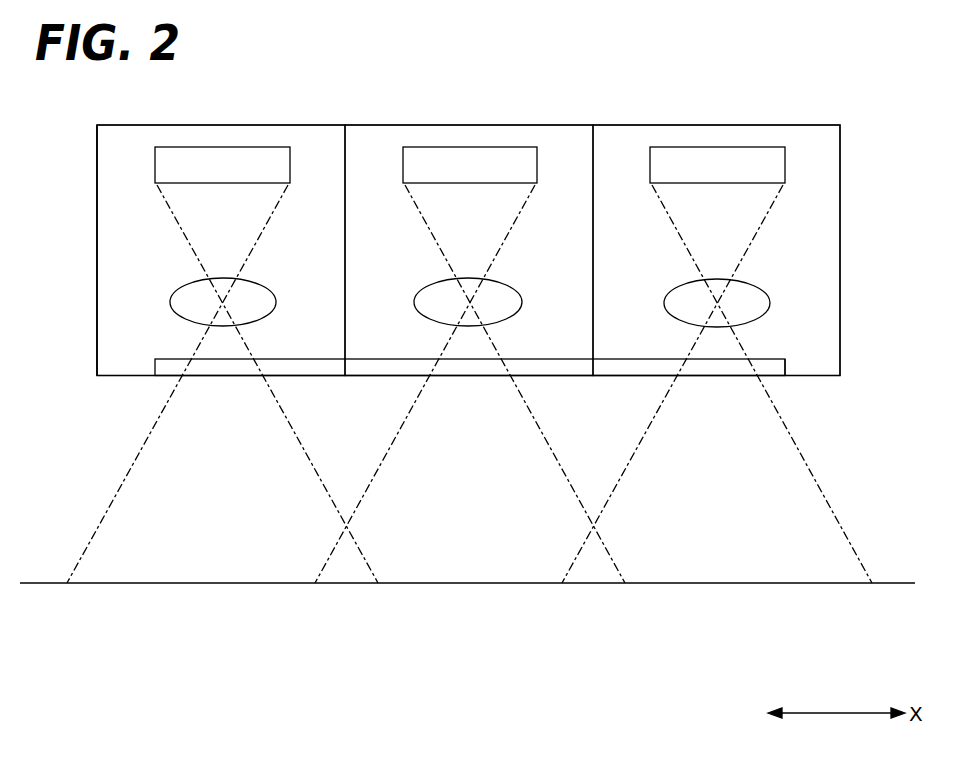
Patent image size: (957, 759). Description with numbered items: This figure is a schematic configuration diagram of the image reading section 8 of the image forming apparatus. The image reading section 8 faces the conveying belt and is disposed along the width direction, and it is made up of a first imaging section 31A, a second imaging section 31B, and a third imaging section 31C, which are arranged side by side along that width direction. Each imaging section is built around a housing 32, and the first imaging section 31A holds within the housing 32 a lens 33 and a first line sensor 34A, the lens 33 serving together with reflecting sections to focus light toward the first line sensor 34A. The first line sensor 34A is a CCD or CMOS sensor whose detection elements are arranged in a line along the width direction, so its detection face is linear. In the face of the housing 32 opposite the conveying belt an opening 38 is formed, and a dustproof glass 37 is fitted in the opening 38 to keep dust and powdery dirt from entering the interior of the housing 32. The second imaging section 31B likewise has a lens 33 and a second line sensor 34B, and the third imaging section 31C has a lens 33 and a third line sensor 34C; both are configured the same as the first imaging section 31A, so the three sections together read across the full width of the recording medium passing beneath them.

The image reading section 8 is at (843, 250).
The first imaging section 31A is at (95, 226).
The second imaging section 31B is at (399, 125).
The third imaging section 31C is at (650, 125).
The housing 32 is at (96, 300).
The lens 33 is at (265, 290).
The first line sensor 34A is at (222, 147).
The second line sensor 34B is at (468, 147).
The third line sensor 34C is at (717, 147).
The dustproof glass 37 is at (157, 365).
The opening 38 is at (775, 358).